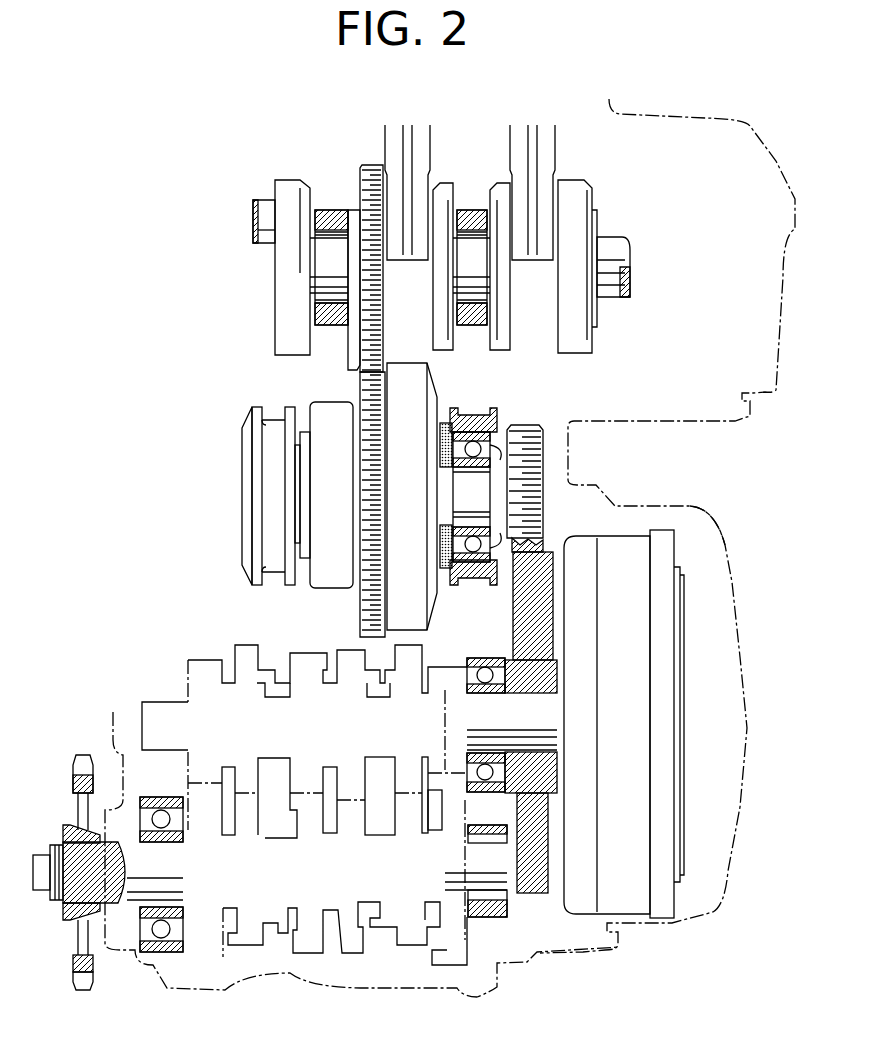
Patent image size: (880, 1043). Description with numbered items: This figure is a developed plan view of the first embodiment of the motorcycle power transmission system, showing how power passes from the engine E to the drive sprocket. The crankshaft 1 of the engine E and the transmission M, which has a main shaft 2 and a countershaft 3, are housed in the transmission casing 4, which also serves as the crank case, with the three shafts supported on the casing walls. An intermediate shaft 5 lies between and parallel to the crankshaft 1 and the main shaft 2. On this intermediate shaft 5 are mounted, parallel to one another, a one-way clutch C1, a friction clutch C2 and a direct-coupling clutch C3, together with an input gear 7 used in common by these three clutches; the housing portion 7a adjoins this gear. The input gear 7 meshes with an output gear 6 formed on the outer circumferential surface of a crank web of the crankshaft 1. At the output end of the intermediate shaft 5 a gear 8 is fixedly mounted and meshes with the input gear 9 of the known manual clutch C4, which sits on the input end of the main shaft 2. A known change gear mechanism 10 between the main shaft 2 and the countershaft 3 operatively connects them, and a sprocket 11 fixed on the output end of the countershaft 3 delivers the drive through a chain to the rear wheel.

The engine E is at (588, 154).
The crankshaft 1 is at (619, 300).
The output gear 6 is at (380, 331).
The input gear 7 is at (360, 378).
The clutch housing 7a is at (333, 588).
The one-way clutch C1 is at (432, 400).
The friction clutch C2 is at (446, 495).
The direct-coupling clutch C3 is at (473, 496).
The intermediate shaft 5 is at (481, 511).
The gear 8 is at (525, 432).
The input gear 9 is at (515, 578).
The main shaft 2 is at (522, 698).
The manual clutch C4 is at (621, 528).
The transmission casing 4 is at (718, 530).
The transmission M is at (277, 643).
The change gear mechanism 10 is at (374, 953).
The countershaft 3 is at (122, 843).
The sprocket 11 is at (73, 978).